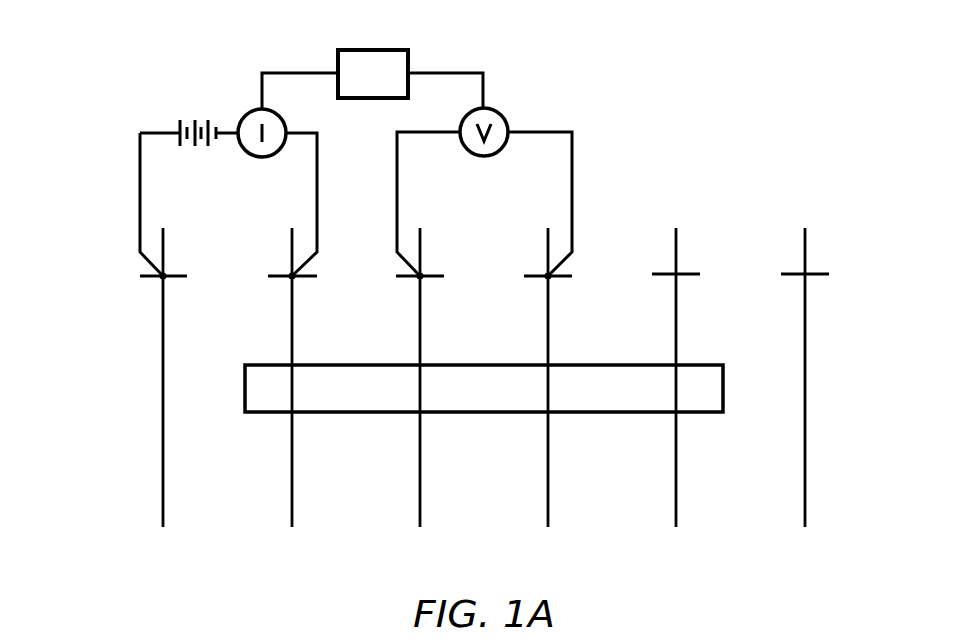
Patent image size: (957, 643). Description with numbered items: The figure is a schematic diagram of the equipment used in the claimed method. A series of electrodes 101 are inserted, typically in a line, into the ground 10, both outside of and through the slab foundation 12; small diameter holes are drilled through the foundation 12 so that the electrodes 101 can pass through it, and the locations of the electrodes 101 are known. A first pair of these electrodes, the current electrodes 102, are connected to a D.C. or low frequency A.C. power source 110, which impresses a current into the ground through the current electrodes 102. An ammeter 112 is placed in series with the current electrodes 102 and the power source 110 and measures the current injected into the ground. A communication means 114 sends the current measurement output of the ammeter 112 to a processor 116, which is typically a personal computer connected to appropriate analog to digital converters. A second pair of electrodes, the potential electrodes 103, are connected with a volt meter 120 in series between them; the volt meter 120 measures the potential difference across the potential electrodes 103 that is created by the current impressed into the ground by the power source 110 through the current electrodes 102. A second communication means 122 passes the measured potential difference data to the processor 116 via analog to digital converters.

The ground 10 is at (663, 165).
The slab foundation 12 is at (485, 365).
The electrodes 101 is at (157, 536).
The current electrodes 102 is at (158, 311).
The potential electrodes 103 is at (413, 342).
The power source 110 is at (192, 150).
The ammeter 112 is at (248, 112).
The communication means 114 is at (300, 72).
The processor 116 is at (372, 50).
The volt meter 120 is at (482, 157).
The communication means 122 is at (445, 72).